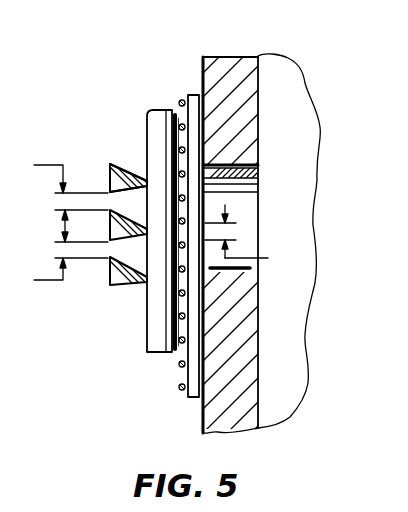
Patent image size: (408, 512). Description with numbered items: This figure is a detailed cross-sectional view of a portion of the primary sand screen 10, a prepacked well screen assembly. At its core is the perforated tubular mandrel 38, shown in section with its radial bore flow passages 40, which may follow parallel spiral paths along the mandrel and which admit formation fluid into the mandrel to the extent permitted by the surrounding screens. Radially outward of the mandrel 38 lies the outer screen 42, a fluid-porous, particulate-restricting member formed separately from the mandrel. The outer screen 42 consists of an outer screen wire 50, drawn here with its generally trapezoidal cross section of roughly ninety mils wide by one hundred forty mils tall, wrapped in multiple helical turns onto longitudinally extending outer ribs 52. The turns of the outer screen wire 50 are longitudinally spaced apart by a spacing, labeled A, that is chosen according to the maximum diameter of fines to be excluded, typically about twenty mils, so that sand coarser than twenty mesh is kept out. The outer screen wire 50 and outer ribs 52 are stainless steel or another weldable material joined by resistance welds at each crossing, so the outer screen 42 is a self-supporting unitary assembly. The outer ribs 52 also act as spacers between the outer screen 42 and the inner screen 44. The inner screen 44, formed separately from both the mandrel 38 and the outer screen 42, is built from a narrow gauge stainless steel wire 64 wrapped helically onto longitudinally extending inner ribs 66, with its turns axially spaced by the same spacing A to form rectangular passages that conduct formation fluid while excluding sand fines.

The primary sand screen 10 is at (291, 50).
The tubular mandrel 38 is at (231, 70).
The bore flow passages 40 is at (240, 173).
The outer screen 42 is at (93, 202).
The inner screen 44 is at (165, 372).
The outer screen wire 50 is at (128, 166).
The outer ribs 52 is at (156, 308).
The inner screen wire 64 is at (188, 219).
The inner ribs 66 is at (193, 100).